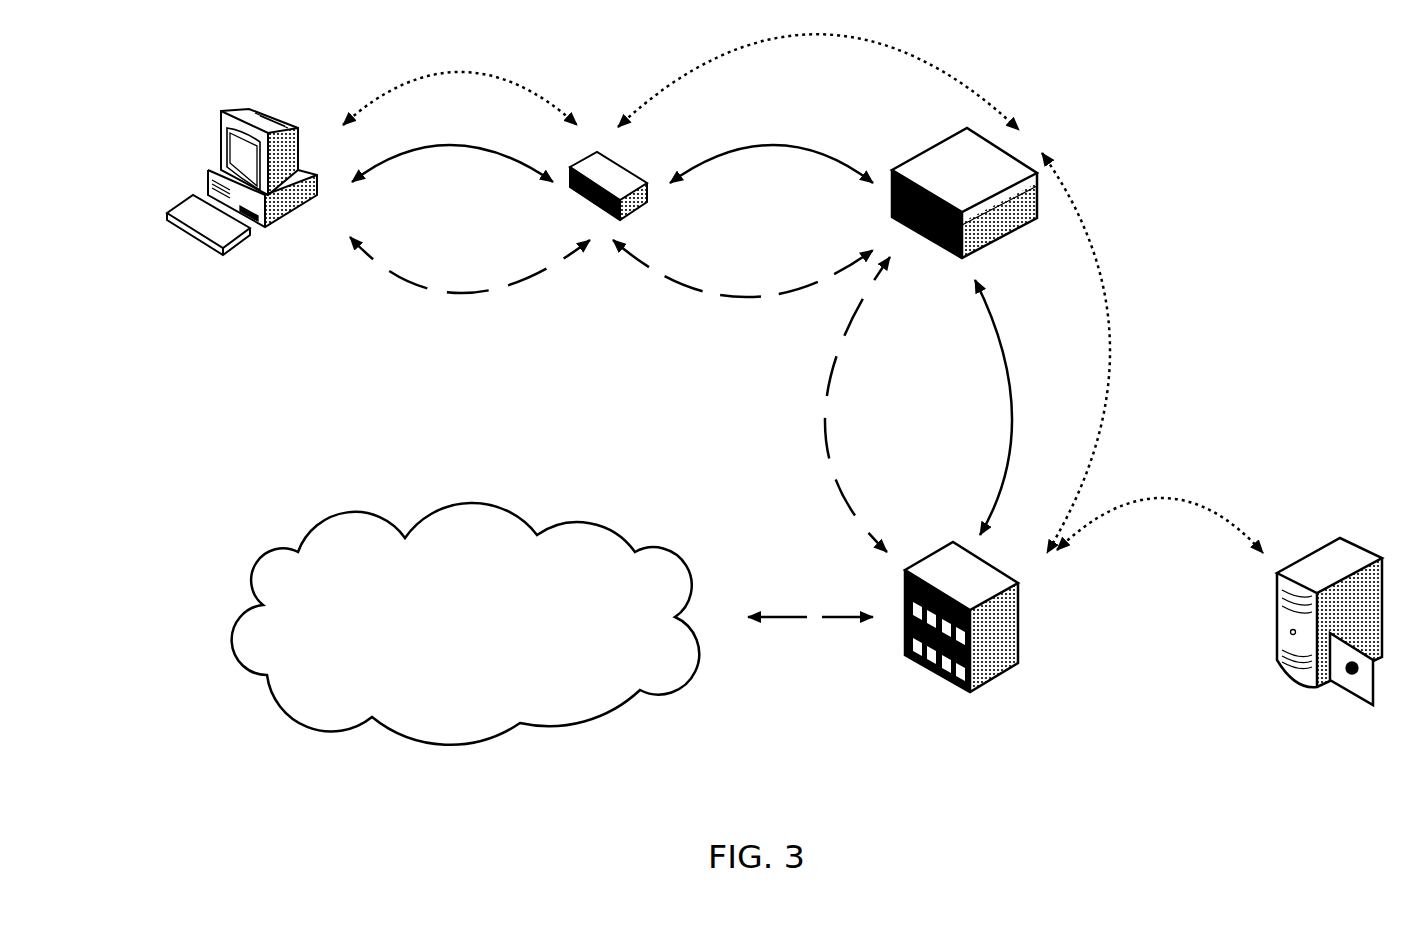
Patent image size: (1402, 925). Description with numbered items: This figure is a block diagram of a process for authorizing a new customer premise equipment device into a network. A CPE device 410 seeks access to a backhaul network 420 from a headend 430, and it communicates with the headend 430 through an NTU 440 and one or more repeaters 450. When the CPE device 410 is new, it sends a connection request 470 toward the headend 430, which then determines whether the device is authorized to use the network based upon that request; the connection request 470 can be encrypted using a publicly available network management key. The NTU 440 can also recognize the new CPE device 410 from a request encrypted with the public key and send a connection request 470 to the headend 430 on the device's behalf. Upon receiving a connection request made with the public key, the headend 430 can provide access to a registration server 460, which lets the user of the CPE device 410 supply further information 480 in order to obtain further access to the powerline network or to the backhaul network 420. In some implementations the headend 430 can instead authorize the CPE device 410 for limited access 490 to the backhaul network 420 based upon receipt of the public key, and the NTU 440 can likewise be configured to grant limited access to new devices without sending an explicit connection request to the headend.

The CPE device 410 is at (260, 107).
The backhaul network 420 is at (653, 550).
The headend 430 is at (967, 693).
The NTU 440 is at (637, 210).
The repeater 450 is at (1000, 243).
The registration server 460 is at (1340, 536).
The connection request 470 is at (460, 145).
The further information 480 is at (490, 73).
The limited access 490 is at (470, 293).